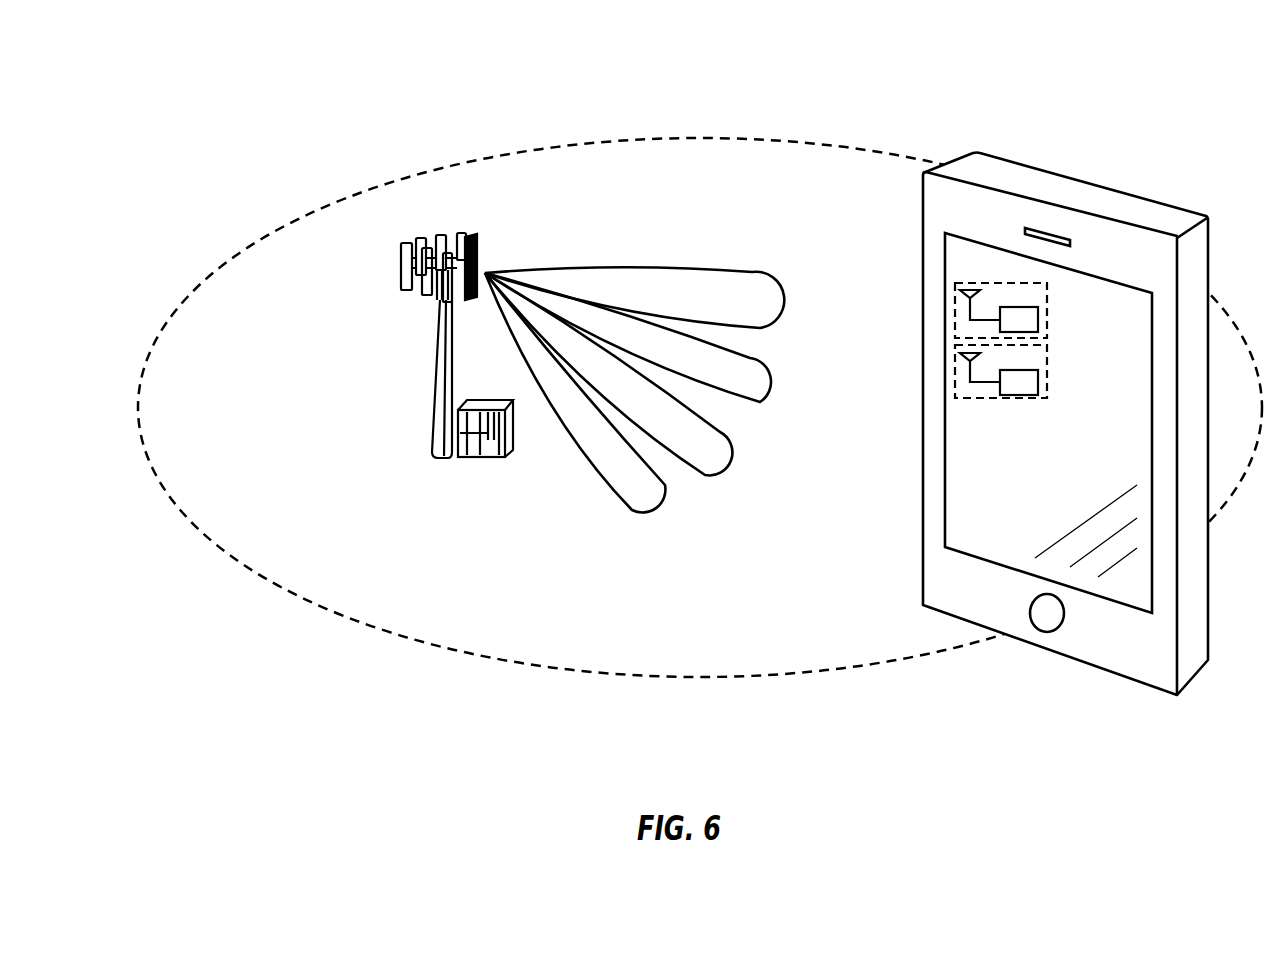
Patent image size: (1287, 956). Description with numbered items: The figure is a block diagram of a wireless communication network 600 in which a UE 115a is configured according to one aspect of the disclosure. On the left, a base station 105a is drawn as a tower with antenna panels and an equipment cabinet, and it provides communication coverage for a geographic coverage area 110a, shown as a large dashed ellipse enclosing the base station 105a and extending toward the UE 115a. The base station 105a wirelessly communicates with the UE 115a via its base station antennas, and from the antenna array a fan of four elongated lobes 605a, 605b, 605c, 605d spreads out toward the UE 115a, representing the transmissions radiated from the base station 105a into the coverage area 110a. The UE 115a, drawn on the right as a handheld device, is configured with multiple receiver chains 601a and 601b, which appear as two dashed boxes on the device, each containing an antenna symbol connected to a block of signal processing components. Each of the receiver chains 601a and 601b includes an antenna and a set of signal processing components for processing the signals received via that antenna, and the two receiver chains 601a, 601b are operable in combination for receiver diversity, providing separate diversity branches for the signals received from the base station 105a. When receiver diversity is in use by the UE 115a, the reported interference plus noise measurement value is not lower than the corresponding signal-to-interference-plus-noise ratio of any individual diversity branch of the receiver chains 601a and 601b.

The wireless communication network 600 is at (796, 74).
The base station 105a is at (472, 458).
The geographic coverage area 110a is at (320, 607).
The UE 115a is at (1065, 409).
The receiver chain 601a is at (1047, 298).
The receiver chain 601b is at (1010, 400).
The beam 605a is at (778, 313).
The beam 605b is at (778, 385).
The beam 605c is at (740, 473).
The beam 605d is at (630, 517).